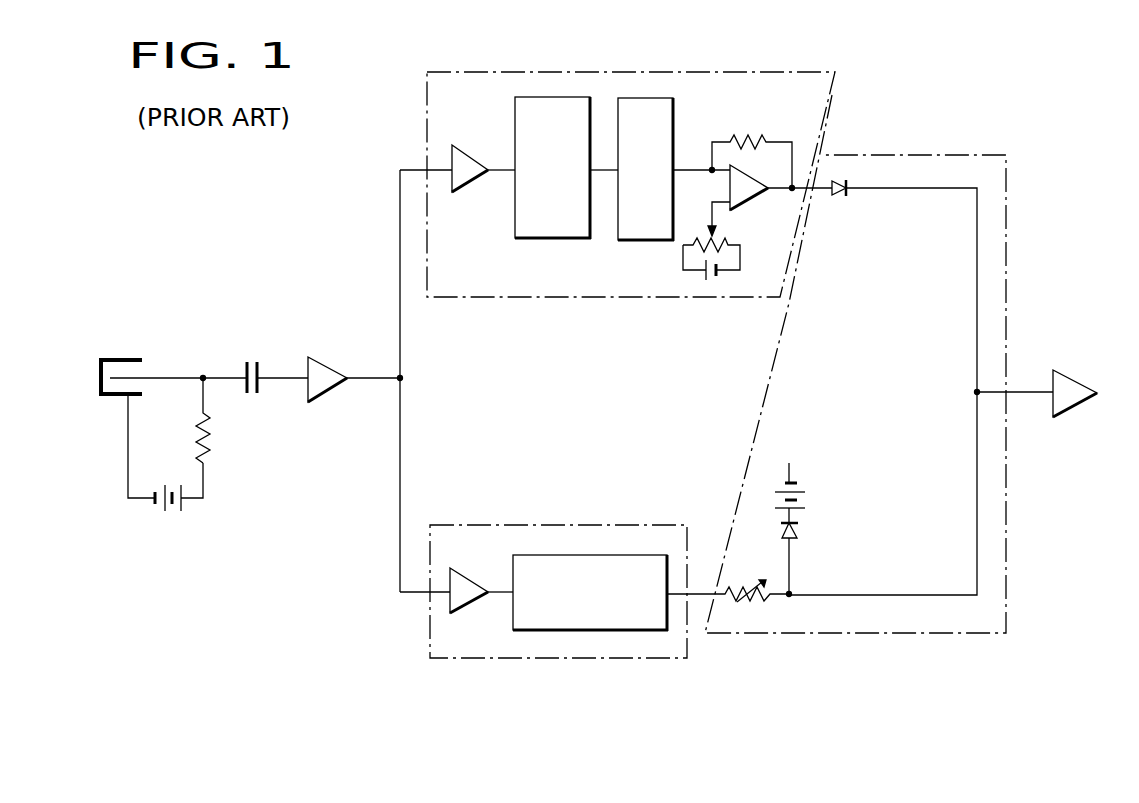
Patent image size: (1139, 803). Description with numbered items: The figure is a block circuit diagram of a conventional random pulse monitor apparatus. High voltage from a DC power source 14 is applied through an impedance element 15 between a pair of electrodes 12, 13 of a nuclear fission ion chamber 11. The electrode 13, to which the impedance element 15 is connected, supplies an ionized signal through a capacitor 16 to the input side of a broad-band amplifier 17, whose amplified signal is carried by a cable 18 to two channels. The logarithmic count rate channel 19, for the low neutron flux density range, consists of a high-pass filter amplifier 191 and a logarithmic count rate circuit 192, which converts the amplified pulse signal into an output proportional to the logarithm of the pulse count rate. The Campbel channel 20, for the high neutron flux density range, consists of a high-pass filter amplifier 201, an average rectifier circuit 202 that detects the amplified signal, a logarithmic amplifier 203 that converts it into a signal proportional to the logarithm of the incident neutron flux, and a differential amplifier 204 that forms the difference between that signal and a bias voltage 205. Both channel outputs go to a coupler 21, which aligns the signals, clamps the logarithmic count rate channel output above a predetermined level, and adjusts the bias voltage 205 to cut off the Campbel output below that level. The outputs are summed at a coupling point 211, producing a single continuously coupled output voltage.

The nuclear fission ion chamber 11 is at (120, 358).
The electrode 12 is at (112, 396).
The electrode 13 is at (155, 379).
The DC power source 14 is at (170, 514).
The impedance element 15 is at (208, 440).
The capacitor 16 is at (254, 360).
The broad-band amplifier 17 is at (334, 376).
The cable 18 is at (363, 383).
The logarithmic count rate channel 19 is at (527, 525).
The high-pass filter amplifier 191 is at (464, 584).
The logarithmic count rate circuit 192 is at (524, 612).
The Campbel channel 20 is at (838, 78).
The high-pass filter amplifier 201 is at (462, 182).
The average rectifier circuit 202 is at (571, 238).
The logarithmic amplifier 203 is at (658, 240).
The differential amplifier 204 is at (748, 190).
The bias voltage 205 is at (712, 277).
The coupler 21 is at (1006, 603).
The coupling point 211 is at (976, 393).